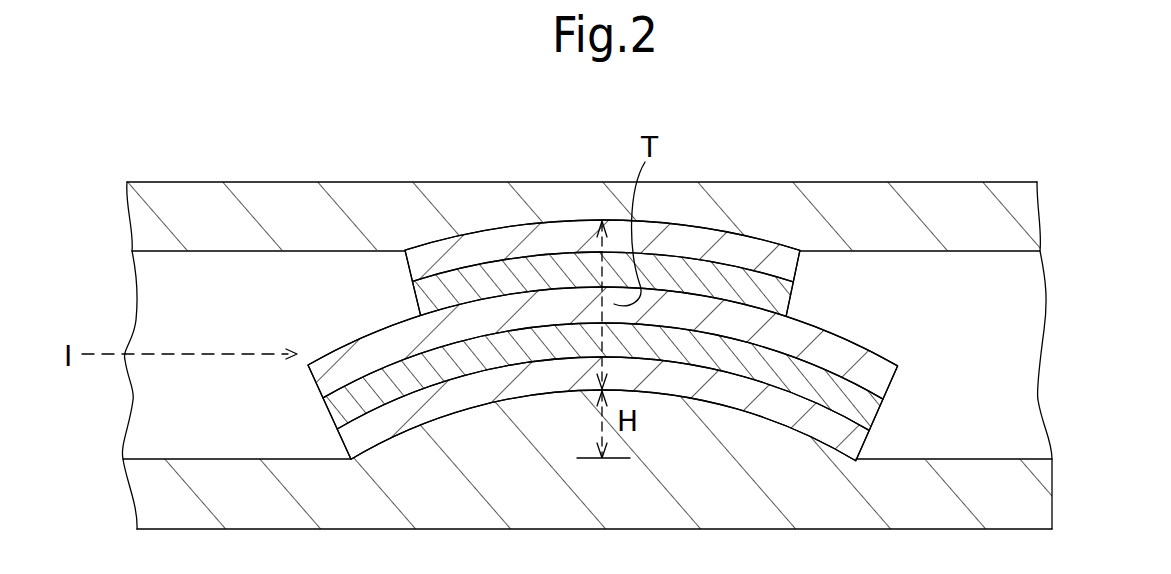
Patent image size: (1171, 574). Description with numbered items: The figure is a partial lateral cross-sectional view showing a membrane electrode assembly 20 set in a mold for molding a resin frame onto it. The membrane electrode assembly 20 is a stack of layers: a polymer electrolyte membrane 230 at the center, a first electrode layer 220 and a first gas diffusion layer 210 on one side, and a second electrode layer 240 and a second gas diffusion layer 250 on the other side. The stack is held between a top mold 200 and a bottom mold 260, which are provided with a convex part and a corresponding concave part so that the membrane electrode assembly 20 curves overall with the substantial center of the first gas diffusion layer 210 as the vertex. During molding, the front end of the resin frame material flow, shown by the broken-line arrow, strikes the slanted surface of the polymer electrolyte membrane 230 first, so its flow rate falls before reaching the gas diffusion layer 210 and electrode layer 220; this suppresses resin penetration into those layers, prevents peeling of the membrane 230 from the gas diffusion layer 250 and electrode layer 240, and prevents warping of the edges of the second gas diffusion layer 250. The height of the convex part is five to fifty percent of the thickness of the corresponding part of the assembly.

The top mold 200 is at (1013, 229).
The first gas diffusion layer 210 is at (783, 267).
The first electrode layer 220 is at (783, 298).
The polymer electrolyte membrane 230 is at (887, 376).
The second electrode layer 240 is at (867, 405).
The second gas diffusion layer 250 is at (857, 437).
The membrane electrode assembly 20 is at (983, 258).
The bottom mold 260 is at (1017, 497).